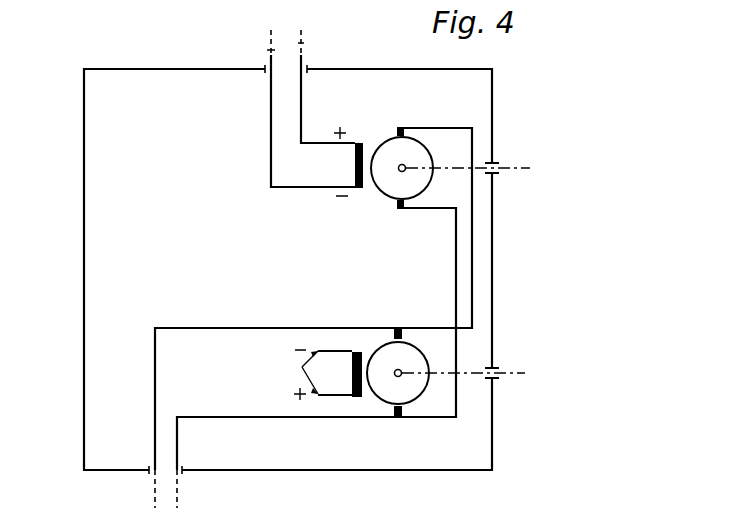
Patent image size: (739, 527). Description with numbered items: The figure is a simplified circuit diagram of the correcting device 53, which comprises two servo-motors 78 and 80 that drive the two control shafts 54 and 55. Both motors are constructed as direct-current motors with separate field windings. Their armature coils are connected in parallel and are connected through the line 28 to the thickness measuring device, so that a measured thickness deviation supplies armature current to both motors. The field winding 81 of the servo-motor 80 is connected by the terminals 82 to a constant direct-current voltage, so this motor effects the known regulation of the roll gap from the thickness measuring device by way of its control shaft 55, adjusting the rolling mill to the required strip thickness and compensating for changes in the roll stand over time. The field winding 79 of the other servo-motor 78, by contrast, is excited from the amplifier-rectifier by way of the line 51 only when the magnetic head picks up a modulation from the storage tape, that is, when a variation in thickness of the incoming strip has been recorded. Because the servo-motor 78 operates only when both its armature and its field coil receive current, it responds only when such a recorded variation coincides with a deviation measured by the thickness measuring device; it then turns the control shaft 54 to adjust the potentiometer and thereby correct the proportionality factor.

The line 28 is at (177, 488).
The line 51 is at (269, 51).
The correcting device 53 is at (82, 410).
The control shaft 54 is at (513, 168).
The control shaft 55 is at (512, 372).
The servo-motor 78 is at (394, 148).
The field winding 79 is at (355, 158).
The servo-motor 80 is at (405, 392).
The field winding 81 is at (350, 388).
The terminals 82 is at (294, 375).